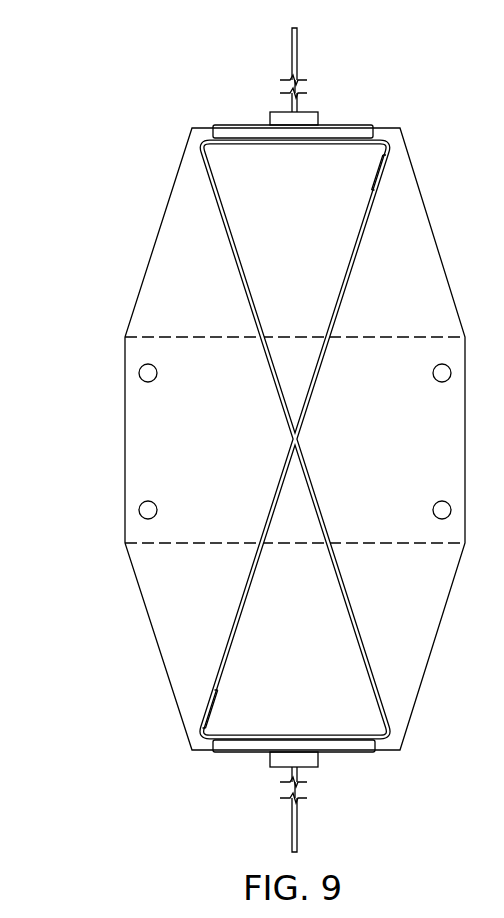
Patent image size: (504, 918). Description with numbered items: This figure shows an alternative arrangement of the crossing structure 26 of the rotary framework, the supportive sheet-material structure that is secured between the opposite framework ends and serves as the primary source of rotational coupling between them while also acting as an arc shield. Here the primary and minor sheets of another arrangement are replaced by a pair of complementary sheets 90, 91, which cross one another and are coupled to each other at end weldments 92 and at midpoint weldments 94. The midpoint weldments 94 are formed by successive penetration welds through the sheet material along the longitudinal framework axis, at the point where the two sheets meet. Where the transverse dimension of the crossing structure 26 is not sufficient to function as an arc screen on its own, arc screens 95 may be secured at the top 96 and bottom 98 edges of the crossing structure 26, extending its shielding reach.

The crossing structure 26 is at (178, 226).
The complementary sheet 90 is at (240, 280).
The complementary sheet 91 is at (358, 256).
The end weldments 92 is at (381, 169).
The midpoint weldments 94 is at (298, 437).
The arc screens 95 is at (298, 42).
The top edge 96 is at (231, 125).
The bottom edge 98 is at (352, 753).